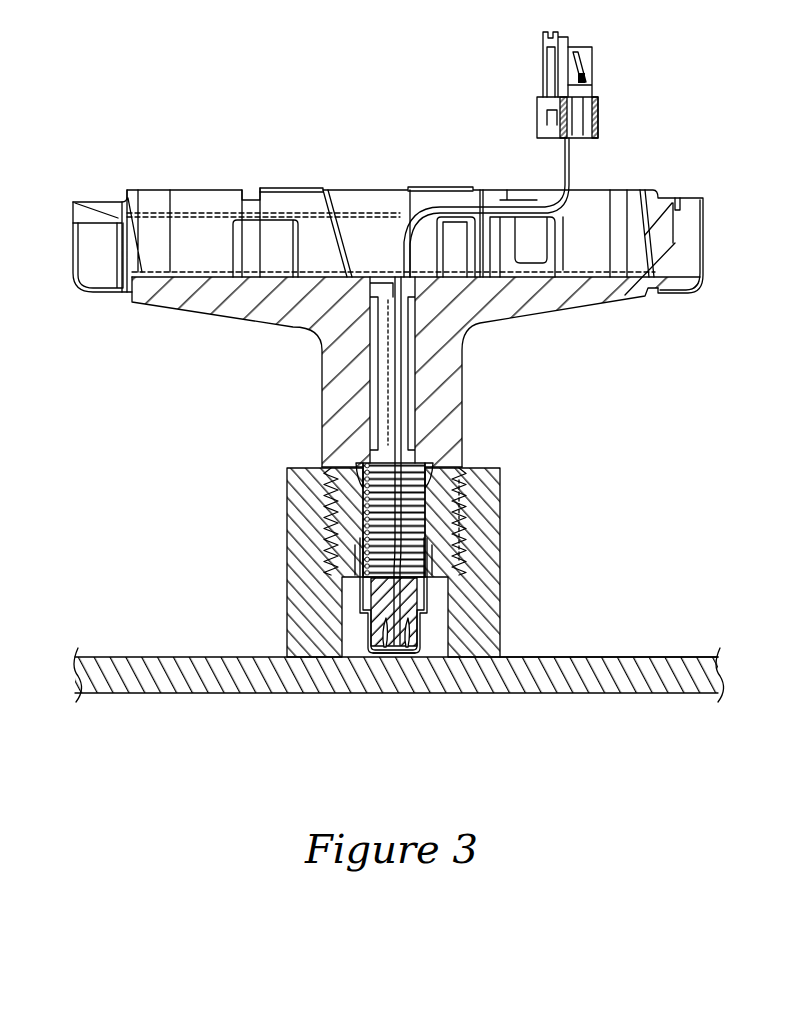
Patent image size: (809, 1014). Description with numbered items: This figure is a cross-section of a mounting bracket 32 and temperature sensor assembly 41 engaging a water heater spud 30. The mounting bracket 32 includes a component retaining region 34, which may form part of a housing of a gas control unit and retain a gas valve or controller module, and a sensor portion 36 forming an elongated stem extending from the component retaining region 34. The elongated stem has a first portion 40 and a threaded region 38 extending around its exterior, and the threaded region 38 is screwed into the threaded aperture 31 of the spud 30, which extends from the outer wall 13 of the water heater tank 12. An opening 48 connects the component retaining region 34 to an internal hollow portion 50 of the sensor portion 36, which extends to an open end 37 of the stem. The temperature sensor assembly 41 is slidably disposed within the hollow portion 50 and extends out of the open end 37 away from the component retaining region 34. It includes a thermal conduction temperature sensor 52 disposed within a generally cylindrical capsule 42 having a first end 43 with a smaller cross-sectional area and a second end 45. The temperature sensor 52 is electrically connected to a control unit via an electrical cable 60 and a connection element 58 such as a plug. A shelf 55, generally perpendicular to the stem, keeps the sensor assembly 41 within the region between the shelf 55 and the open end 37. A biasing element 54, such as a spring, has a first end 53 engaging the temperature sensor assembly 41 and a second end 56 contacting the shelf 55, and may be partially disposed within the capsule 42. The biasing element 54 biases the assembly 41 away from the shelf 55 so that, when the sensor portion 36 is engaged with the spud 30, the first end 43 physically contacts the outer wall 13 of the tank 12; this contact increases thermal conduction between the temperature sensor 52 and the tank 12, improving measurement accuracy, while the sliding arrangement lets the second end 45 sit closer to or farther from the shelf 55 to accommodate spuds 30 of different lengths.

The water heater tank 12 is at (572, 678).
The outer wall 13 is at (627, 656).
The water heater spud 30 is at (492, 528).
The threaded aperture 31 is at (455, 521).
The mounting bracket 32 is at (706, 70).
The component retaining region 34 is at (216, 232).
The sensor portion 36 is at (272, 398).
The open end 37 is at (345, 578).
The threaded region 38 is at (322, 493).
The first portion 40 is at (462, 383).
The temperature sensor assembly 41 is at (362, 634).
The capsule 42 is at (420, 638).
The first end 43 is at (380, 655).
The second end 45 is at (430, 555).
The opening 48 is at (386, 272).
The hollow portion 50 is at (428, 500).
The temperature sensor 52 is at (418, 603).
The first end of biasing element 53 is at (428, 580).
The biasing element 54 is at (367, 507).
The shelf 55 is at (364, 462).
The second end of biasing element 56 is at (422, 464).
The connection element 58 is at (598, 118).
The electrical cable 60 is at (358, 600).